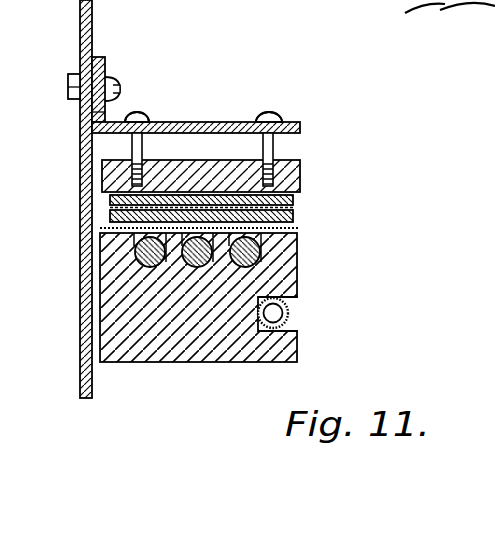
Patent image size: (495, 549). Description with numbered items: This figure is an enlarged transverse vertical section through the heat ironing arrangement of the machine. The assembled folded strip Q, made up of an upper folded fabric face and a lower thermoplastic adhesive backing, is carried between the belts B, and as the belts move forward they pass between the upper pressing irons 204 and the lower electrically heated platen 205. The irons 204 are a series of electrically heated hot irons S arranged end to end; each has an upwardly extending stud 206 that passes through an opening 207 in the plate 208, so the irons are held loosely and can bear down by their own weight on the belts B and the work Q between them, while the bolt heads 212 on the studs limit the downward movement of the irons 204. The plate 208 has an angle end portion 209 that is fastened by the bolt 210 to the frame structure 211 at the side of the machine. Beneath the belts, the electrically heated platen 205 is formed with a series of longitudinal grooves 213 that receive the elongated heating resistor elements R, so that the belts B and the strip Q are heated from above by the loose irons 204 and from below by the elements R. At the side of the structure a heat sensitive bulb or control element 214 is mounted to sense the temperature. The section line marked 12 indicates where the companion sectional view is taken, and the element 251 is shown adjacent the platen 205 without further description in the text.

The frame structure 211 is at (94, 21).
The angle end portion 209 is at (80, 66).
The bolt 210 is at (68, 89).
The plate 208 is at (91, 132).
The openings 207 is at (158, 122).
The upwardly extending studs 206 is at (133, 114).
The bolt heads 212 is at (277, 116).
The upper pressing irons 204 is at (232, 185).
The electrically heated platen 205 is at (130, 350).
The longitudinal grooves 213 is at (100, 268).
The heat sensitive control element 214 is at (288, 313).
The gasket strip 251 is at (120, 236).
The section line 12- 12 is at (52, 231).
The belts B is at (297, 209).
The assembled folded strip Q is at (196, 207).
The hot irons S is at (296, 164).
The heating elements R is at (203, 264).